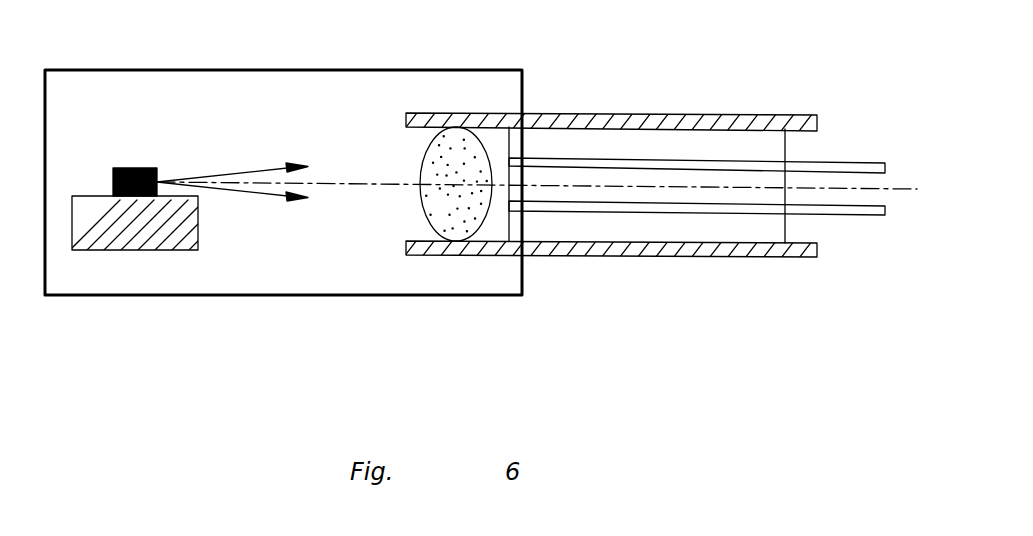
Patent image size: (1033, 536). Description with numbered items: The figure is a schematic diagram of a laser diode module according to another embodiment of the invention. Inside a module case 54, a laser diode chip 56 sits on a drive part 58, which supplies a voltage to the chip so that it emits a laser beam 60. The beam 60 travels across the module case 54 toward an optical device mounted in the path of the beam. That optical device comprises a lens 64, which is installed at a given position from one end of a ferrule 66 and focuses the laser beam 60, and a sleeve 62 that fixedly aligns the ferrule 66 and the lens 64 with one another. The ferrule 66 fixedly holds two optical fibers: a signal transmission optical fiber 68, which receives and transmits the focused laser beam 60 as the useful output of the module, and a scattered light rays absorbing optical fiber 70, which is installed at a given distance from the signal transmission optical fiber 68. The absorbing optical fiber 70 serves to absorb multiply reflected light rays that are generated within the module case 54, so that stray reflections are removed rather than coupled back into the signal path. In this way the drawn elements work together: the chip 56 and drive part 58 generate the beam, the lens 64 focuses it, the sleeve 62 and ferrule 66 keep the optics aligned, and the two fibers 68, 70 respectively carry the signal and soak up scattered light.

The module case 54 is at (285, 69).
The laser diode chip 56 is at (130, 167).
The drive part 58 is at (133, 245).
The laser beam 60 is at (265, 180).
The sleeve 62 is at (644, 120).
The lens 64 is at (455, 143).
The ferrule 66 is at (655, 234).
The signal transmission optical fiber 68 is at (858, 165).
The scattered light rays absorbing optical fiber 70 is at (854, 212).